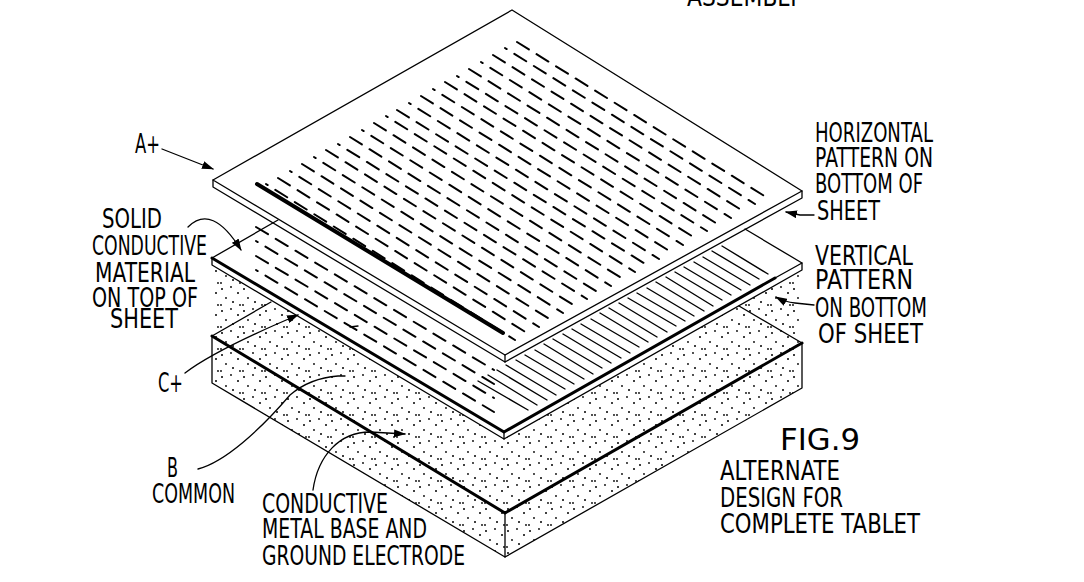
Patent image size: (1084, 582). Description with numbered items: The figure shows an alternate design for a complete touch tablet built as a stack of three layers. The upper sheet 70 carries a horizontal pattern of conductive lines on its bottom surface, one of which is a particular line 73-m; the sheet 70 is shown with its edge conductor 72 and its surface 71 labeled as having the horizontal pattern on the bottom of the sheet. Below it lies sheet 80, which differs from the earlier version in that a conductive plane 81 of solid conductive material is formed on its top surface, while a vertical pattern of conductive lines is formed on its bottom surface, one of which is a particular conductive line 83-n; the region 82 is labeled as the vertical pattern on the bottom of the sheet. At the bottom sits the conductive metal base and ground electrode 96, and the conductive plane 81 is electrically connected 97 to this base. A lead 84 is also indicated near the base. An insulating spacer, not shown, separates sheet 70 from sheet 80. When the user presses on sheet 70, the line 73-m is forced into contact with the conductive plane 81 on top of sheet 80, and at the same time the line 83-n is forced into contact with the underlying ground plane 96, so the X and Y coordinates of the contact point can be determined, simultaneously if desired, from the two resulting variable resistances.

The sheet 70 is at (499, 181).
The top sheet with horizontal pattern on bottom 71 is at (773, 187).
The conductive bus bar on top sheet (A+) 72 is at (257, 184).
The line 73-m is at (585, 82).
The sheet 80 is at (480, 300).
The conductive plane 81 is at (267, 278).
The vertical pattern on bottom of sheet 82 is at (768, 268).
The conductive line 83-n is at (279, 243).
The lead connection to common electrode 84 is at (350, 327).
The conductive metal base and ground electrode 96 is at (501, 412).
The electrical connection 97 is at (392, 342).